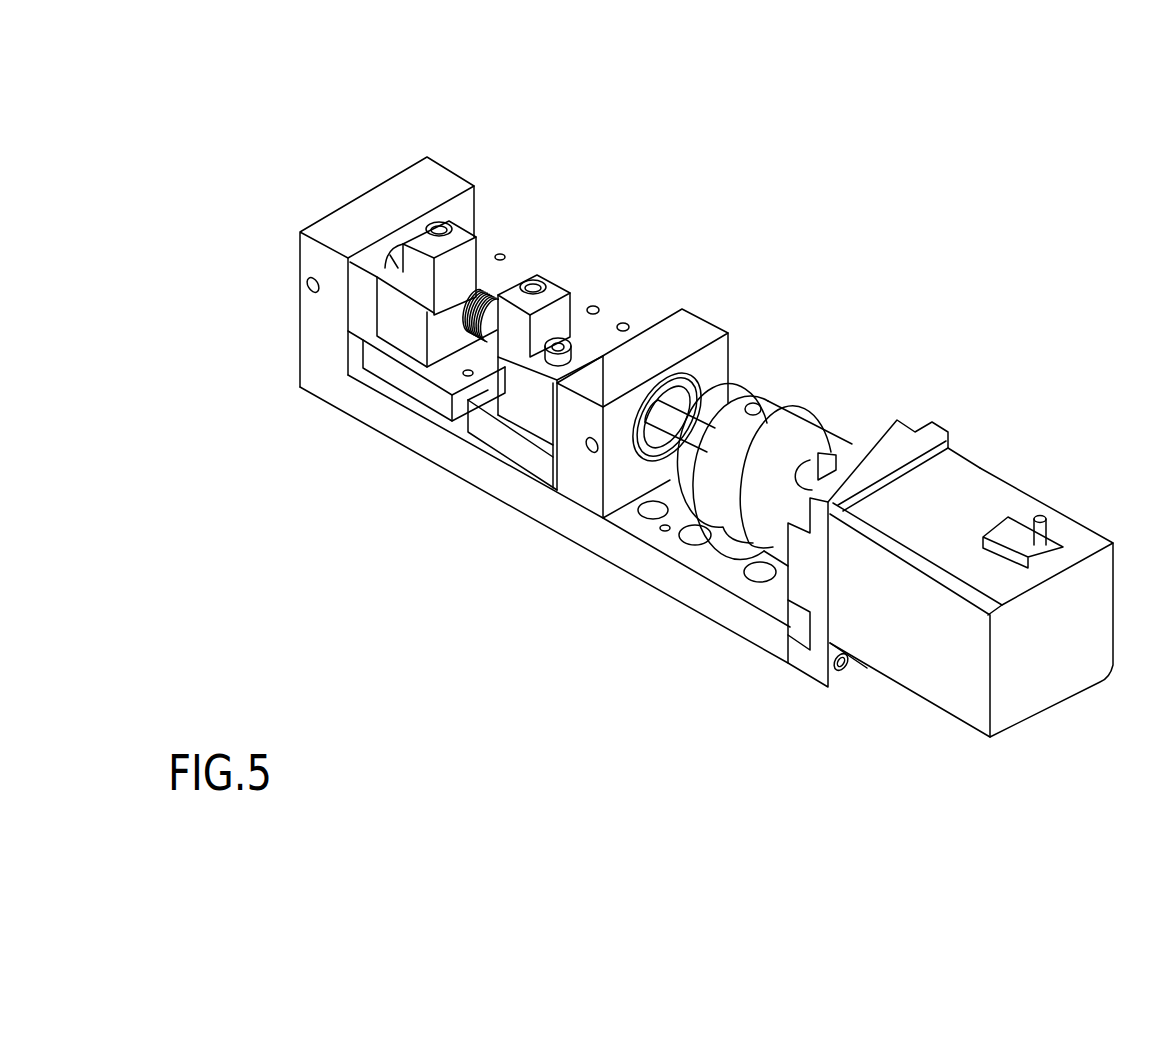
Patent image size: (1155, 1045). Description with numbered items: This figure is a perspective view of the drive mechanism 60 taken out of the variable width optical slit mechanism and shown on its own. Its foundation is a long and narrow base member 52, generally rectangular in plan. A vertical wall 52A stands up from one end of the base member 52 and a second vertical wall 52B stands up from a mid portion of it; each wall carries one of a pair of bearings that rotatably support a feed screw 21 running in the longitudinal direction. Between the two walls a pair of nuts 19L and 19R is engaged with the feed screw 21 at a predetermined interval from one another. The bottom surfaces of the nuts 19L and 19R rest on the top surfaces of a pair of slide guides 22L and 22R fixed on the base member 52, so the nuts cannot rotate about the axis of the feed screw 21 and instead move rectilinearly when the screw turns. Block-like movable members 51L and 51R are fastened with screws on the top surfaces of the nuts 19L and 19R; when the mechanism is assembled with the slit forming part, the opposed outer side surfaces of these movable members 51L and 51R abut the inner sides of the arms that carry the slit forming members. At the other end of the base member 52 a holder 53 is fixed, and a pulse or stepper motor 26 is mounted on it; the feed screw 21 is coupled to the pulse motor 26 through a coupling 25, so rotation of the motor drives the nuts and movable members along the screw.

The drive mechanism 60 is at (709, 170).
The base member 52 is at (630, 556).
The vertical wall 52A is at (356, 230).
The vertical wall 52B is at (682, 337).
The movable member 51L is at (437, 222).
The movable member 51R is at (540, 275).
The nut 19L is at (397, 333).
The nut 19R is at (522, 400).
The slide guide 22L is at (432, 393).
The slide guide 22R is at (493, 437).
The feed screw 21 is at (702, 420).
The coupling 25 is at (782, 412).
The pulse motor 26 is at (982, 490).
The holder 53 is at (808, 665).